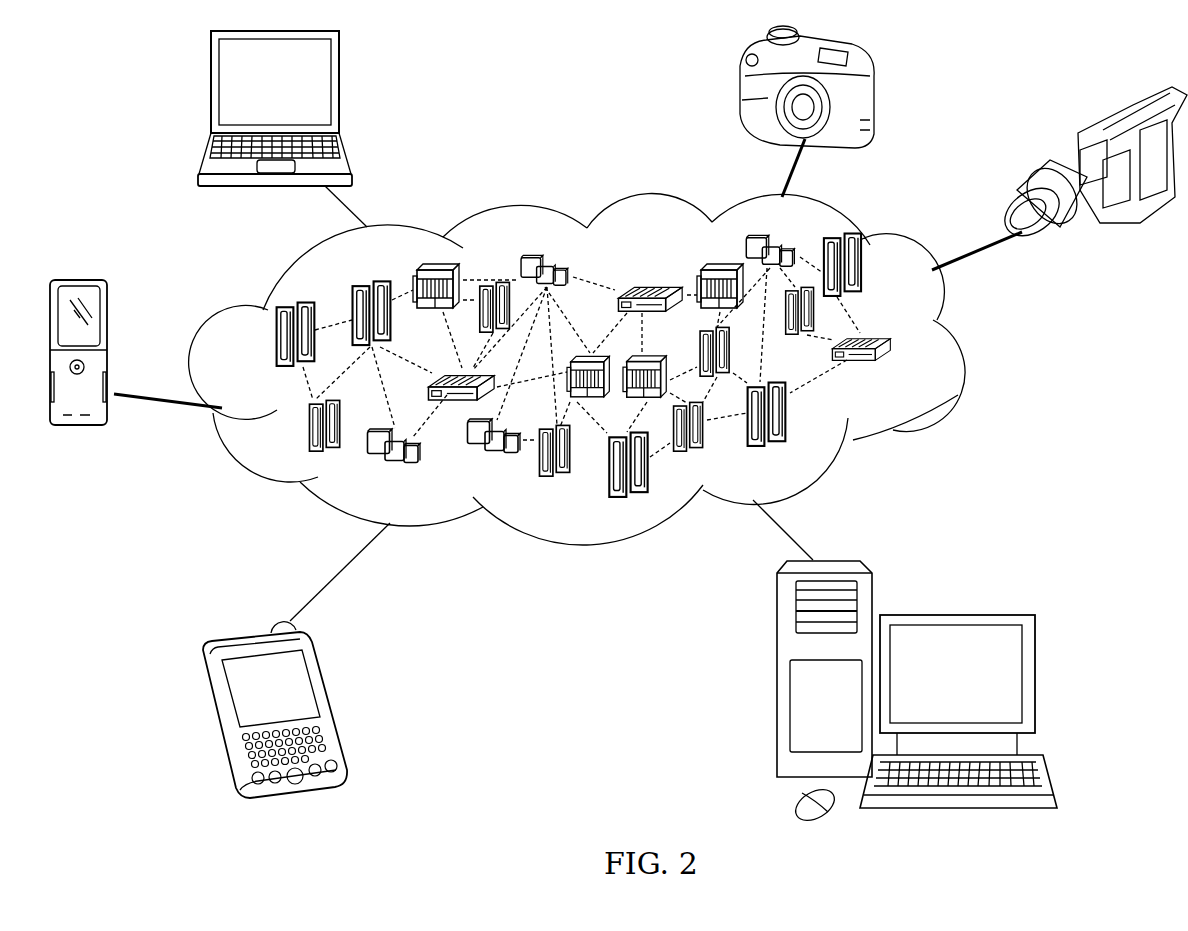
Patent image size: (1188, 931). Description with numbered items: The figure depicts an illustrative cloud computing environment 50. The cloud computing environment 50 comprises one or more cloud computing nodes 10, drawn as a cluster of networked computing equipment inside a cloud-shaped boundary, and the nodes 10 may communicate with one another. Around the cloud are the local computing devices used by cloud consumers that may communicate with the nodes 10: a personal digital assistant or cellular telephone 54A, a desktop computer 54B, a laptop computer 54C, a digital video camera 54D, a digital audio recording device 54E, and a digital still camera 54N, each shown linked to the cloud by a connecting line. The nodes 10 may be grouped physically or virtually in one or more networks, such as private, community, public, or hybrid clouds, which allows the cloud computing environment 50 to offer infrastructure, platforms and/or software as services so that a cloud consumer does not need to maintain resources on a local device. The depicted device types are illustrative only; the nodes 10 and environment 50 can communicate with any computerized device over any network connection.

The cloud computing nodes 10 is at (595, 369).
The cloud computing environment 50 is at (955, 348).
The personal digital assistant or cellular telephone 54A is at (333, 705).
The desktop computer 54B is at (956, 614).
The laptop computer 54C is at (340, 86).
The digital video camera 54D is at (1115, 225).
The digital audio recording device 54E is at (70, 430).
The digital still camera 54N is at (740, 95).